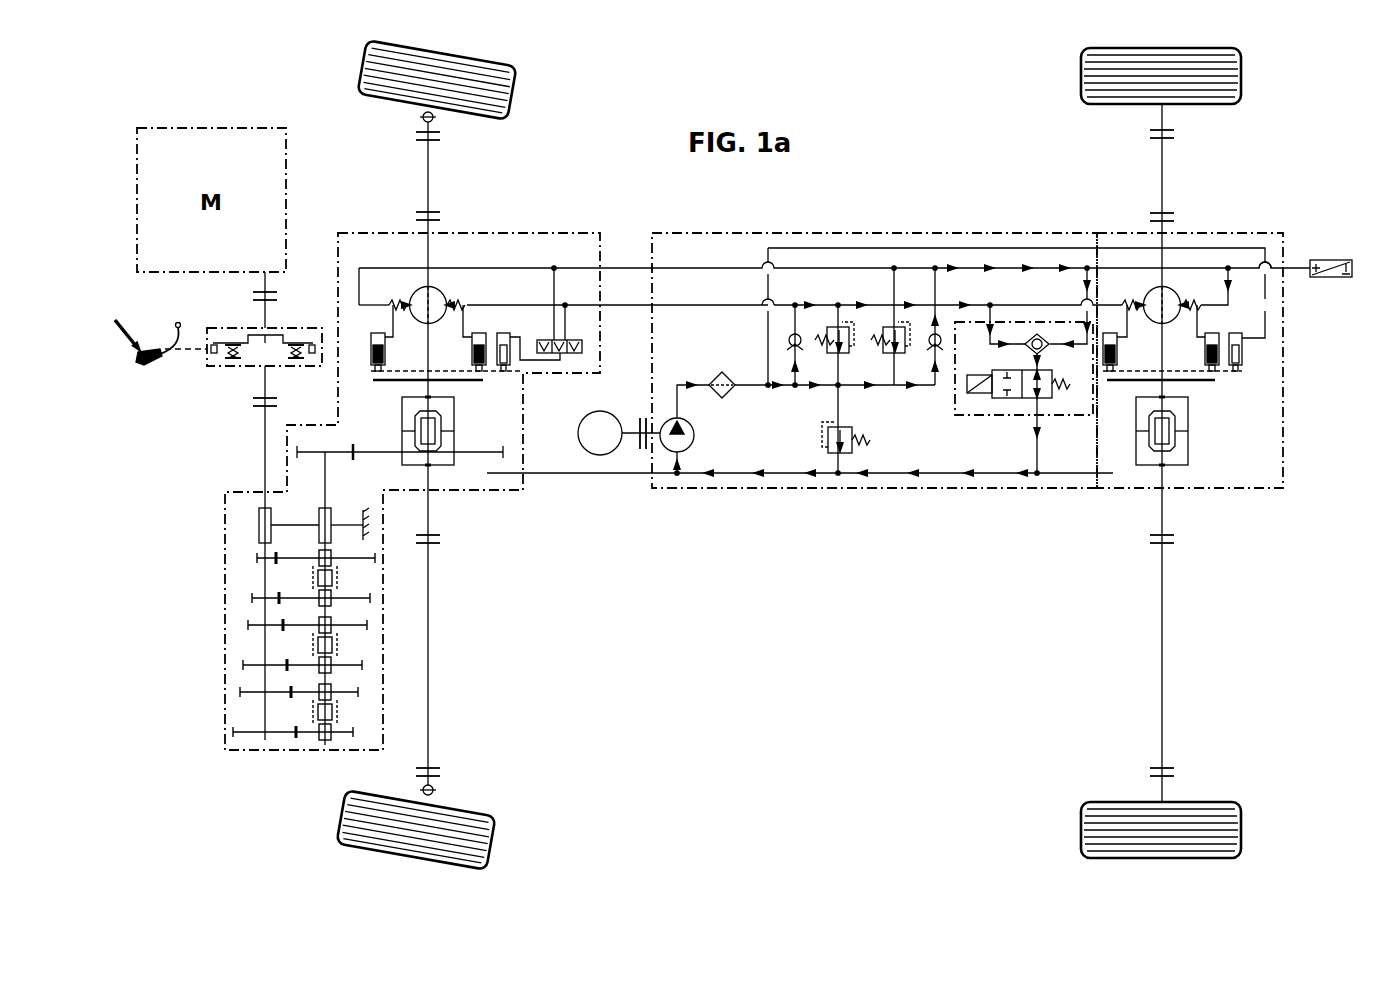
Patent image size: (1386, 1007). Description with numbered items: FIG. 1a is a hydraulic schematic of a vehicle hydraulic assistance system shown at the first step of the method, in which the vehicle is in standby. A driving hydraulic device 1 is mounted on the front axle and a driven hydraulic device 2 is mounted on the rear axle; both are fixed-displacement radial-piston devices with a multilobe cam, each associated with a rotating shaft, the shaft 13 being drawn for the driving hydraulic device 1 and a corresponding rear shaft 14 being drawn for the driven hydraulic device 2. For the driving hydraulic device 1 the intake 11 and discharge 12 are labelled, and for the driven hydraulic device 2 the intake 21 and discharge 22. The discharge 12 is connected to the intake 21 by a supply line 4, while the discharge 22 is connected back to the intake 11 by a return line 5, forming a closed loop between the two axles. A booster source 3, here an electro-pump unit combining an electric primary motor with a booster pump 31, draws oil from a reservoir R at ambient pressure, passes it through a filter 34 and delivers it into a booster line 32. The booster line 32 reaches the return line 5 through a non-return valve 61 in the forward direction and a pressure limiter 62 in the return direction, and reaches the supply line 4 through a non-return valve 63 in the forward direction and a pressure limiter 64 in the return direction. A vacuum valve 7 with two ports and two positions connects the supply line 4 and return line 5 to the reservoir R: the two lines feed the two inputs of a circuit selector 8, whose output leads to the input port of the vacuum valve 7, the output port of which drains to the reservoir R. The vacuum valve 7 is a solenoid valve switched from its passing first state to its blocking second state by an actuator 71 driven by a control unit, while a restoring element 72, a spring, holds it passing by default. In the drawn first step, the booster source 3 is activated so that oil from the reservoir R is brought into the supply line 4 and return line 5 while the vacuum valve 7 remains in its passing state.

The driving hydraulic device 1 is at (563, 315).
The driven hydraulic device 2 is at (1172, 314).
The booster source 3 is at (578, 431).
The booster pump 31 is at (641, 433).
The supply line 4 is at (611, 263).
The return line 5 is at (612, 307).
The vacuum valve 7 is at (800, 412).
The circuit selector 8 is at (1034, 333).
The intake 11 is at (450, 303).
The discharge 12 is at (408, 303).
The rotating shaft 13 is at (429, 193).
The rear drive shaft 14 is at (1160, 192).
The intake 21 is at (1180, 303).
The discharge 22 is at (1143, 303).
The booster line 32 is at (748, 388).
The filter 34 is at (722, 371).
The non-return valve 61 is at (788, 341).
The pressure limiter 62 is at (838, 325).
The non-return valve 63 is at (932, 325).
The pressure limiter 64 is at (888, 325).
The actuator 71 is at (992, 398).
The restoring element 72 is at (1058, 387).
The reservoir R is at (553, 478).